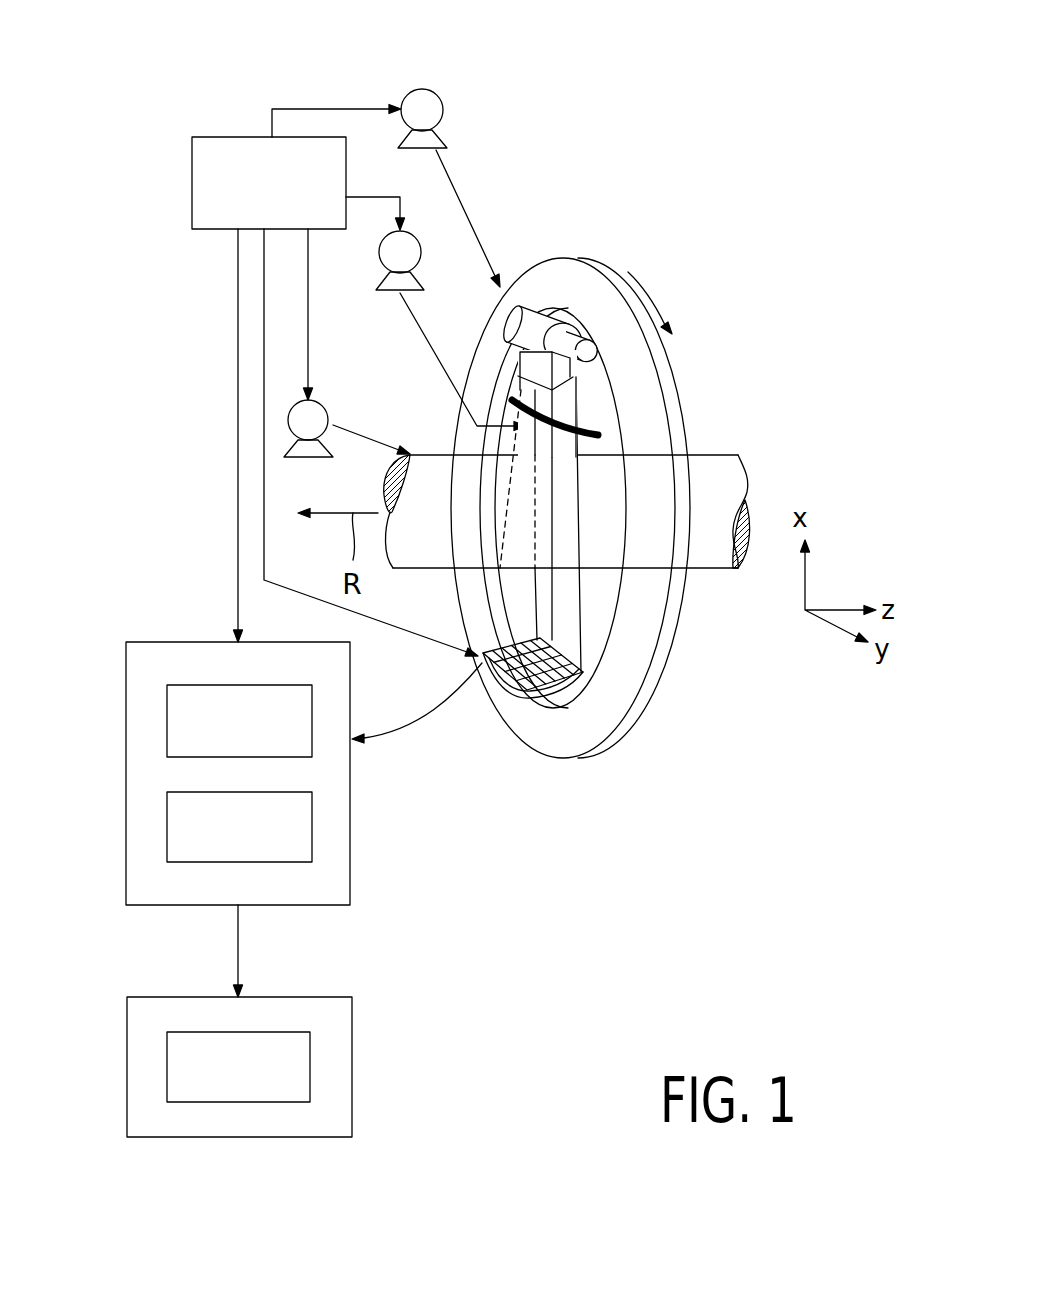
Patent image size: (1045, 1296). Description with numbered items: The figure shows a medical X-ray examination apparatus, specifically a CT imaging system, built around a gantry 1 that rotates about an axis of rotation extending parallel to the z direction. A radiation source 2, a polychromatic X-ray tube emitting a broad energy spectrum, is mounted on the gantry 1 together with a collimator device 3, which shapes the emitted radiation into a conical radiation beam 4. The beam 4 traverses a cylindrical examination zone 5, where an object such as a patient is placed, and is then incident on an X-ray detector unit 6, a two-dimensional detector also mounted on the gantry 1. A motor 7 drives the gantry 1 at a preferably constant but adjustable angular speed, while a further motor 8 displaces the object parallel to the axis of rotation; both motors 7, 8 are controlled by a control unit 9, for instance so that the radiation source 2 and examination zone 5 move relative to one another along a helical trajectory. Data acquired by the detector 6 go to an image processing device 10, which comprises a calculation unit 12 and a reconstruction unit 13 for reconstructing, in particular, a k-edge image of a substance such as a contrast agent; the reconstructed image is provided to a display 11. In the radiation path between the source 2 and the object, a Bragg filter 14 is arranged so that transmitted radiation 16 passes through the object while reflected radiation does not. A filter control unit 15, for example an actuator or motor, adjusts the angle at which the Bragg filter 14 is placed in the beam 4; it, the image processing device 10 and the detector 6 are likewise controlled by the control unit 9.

The gantry 1 is at (625, 677).
The radiation source 2 is at (538, 318).
The collimator device 3 is at (571, 378).
The conical radiation beam 4 is at (574, 400).
The cylindrical examination zone 5 is at (417, 460).
The X-ray detector unit 6 is at (517, 697).
The motor 7 is at (440, 88).
The further motor 8 is at (330, 408).
The control unit 9 is at (212, 137).
The image processing device 10 is at (254, 773).
The display 11 is at (127, 1068).
The calculation unit 12 is at (167, 723).
The reconstruction unit 13 is at (167, 815).
The Bragg filter 14 is at (604, 437).
The filter control unit 15 is at (378, 258).
The transmitted radiation 16 is at (555, 627).